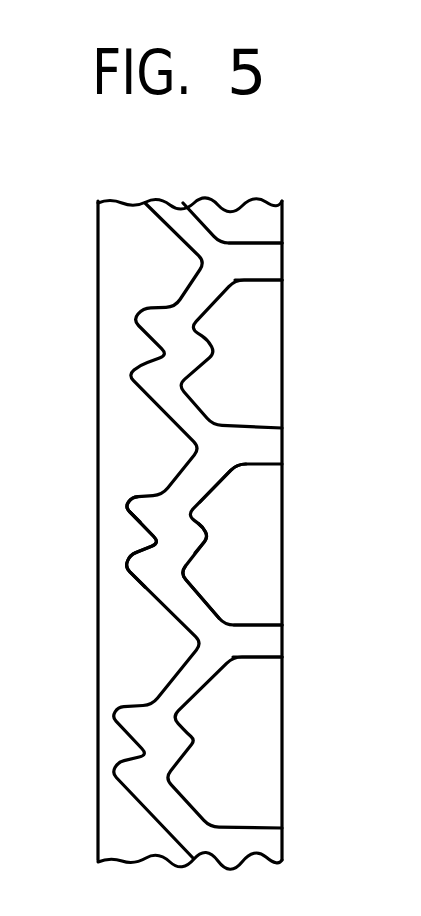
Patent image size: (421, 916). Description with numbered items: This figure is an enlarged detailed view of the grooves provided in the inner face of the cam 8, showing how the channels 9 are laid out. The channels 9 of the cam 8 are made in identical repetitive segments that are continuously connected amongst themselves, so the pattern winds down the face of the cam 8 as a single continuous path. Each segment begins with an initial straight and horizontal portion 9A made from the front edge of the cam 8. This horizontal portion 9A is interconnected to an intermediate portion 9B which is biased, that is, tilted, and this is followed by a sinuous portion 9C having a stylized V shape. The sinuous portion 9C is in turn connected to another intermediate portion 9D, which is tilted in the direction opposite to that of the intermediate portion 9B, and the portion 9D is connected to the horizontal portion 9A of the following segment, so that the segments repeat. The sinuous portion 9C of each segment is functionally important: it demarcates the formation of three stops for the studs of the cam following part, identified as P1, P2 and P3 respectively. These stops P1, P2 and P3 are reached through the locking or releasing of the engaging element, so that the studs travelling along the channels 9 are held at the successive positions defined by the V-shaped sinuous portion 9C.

The cam 8 is at (100, 287).
The channels 9 is at (252, 418).
The initial straight and horizontal portion 9A is at (260, 443).
The biased intermediate portion 9B is at (192, 607).
The sinuous portion 9C is at (152, 520).
The intermediate portion tilted in opposite direction 9D is at (202, 483).
The stop P1 is at (135, 567).
The stop P2 is at (197, 540).
The stop P3 is at (135, 510).